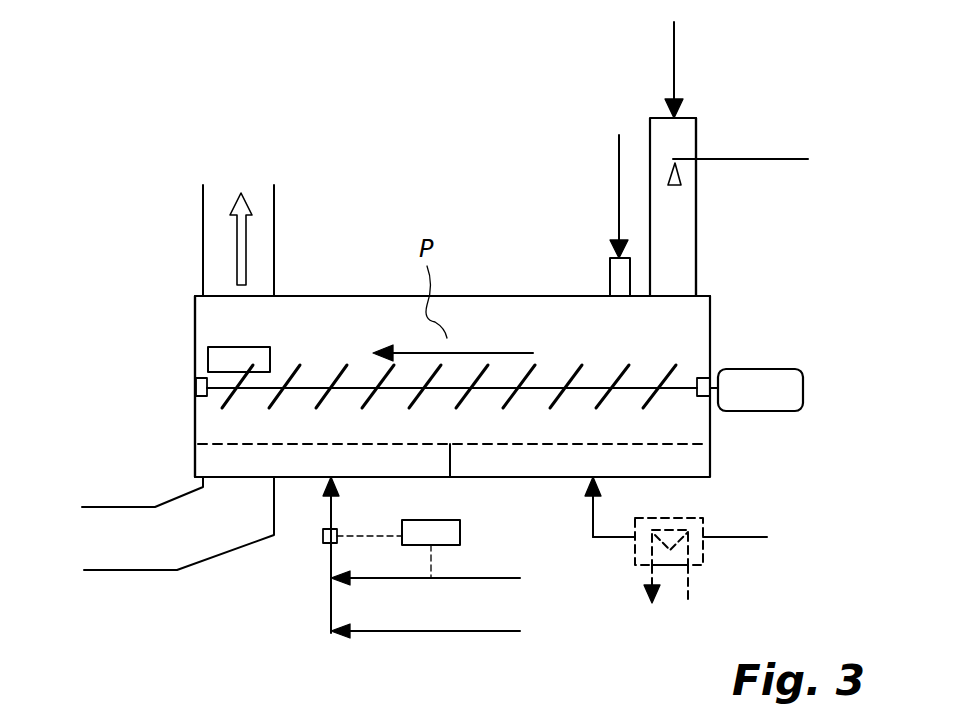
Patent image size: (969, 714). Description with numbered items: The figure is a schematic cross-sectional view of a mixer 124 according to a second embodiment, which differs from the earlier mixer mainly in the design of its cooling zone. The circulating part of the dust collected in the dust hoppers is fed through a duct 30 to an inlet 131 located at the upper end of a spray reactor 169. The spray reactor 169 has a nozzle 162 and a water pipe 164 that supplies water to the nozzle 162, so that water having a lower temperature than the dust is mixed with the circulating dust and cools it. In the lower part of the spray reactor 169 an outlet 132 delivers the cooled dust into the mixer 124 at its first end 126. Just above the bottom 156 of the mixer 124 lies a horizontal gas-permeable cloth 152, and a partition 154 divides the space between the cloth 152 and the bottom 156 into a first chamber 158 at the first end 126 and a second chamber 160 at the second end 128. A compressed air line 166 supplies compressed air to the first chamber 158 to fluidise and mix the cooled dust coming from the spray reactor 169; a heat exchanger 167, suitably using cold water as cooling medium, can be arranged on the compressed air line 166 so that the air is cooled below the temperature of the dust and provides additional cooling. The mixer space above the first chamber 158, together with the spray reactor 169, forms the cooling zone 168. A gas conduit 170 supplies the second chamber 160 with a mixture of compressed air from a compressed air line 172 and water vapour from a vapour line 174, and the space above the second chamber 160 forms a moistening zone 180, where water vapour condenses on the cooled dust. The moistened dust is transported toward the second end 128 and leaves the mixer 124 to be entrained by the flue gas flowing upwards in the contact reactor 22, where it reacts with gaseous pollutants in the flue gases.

The contact reactor 22 is at (215, 241).
The duct 30 is at (674, 47).
The mixer 124 is at (370, 213).
The first end 126 is at (692, 319).
The second end 128 is at (213, 322).
The inlet 131 is at (680, 117).
The outlet 132 is at (675, 297).
The gas-permeable cloth 152 is at (655, 445).
The partition 154 is at (492, 463).
The bottom 156 is at (688, 478).
The first chamber 158 is at (560, 462).
The second chamber 160 is at (260, 462).
The nozzle 162 is at (681, 184).
The water pipe 164 is at (735, 160).
The compressed air line 166 is at (733, 537).
The heat exchanger 167 is at (638, 552).
The cooling zone 168 is at (610, 367).
The spray reactor 169 is at (696, 243).
The gas conduit 170 is at (327, 508).
The compressed air line 172 is at (430, 631).
The vapour line 174 is at (397, 578).
The moistening zone 180 is at (240, 423).